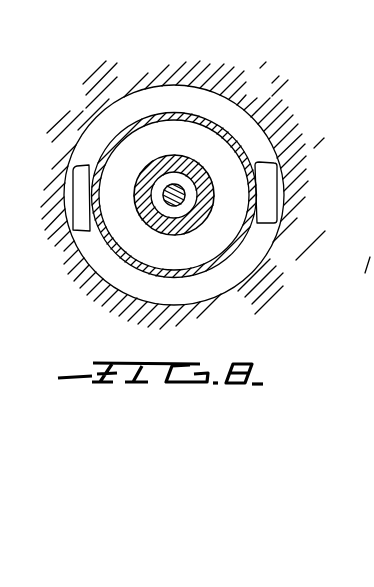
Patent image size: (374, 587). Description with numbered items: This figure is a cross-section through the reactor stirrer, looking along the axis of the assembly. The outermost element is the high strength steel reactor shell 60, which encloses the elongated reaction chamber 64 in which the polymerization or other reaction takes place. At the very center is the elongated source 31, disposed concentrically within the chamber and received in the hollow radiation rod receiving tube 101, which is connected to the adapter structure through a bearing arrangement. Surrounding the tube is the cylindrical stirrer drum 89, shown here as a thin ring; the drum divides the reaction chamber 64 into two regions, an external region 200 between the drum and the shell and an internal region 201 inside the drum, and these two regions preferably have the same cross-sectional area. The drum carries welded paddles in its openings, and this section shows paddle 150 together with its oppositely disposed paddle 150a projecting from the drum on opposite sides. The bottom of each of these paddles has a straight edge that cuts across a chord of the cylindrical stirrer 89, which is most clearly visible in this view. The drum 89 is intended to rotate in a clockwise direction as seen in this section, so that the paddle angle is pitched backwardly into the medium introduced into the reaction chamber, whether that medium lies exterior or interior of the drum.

The external region 200 is at (213, 108).
The internal region 201 is at (132, 142).
The stirrer drum 89 is at (166, 103).
The hollow radiation rod receiving tube 101 is at (200, 150).
The elongated source 31 is at (175, 197).
The paddle 150 is at (82, 218).
The oppositely disposed paddle 150a is at (266, 177).
The reaction chamber 64 is at (257, 89).
The reactor shell 60 is at (303, 286).